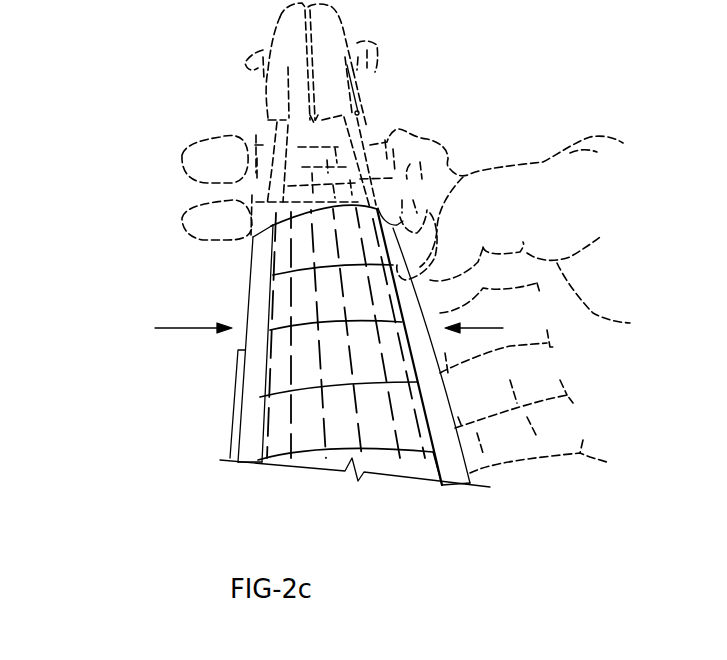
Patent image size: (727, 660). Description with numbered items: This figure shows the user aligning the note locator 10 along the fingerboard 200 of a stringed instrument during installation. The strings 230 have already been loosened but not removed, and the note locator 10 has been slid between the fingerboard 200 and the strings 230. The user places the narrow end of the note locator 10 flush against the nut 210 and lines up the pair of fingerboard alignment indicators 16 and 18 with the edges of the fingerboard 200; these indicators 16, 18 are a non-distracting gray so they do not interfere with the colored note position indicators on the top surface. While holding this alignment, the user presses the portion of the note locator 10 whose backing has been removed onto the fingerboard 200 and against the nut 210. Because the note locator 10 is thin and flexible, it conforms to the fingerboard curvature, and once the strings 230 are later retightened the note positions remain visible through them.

The note locator 10 is at (297, 417).
The fingerboard alignment indicator 16 is at (257, 463).
The fingerboard alignment indicator 18 is at (442, 485).
The fingerboard 200 is at (255, 292).
The nut 210 is at (297, 217).
The strings 230 is at (317, 357).